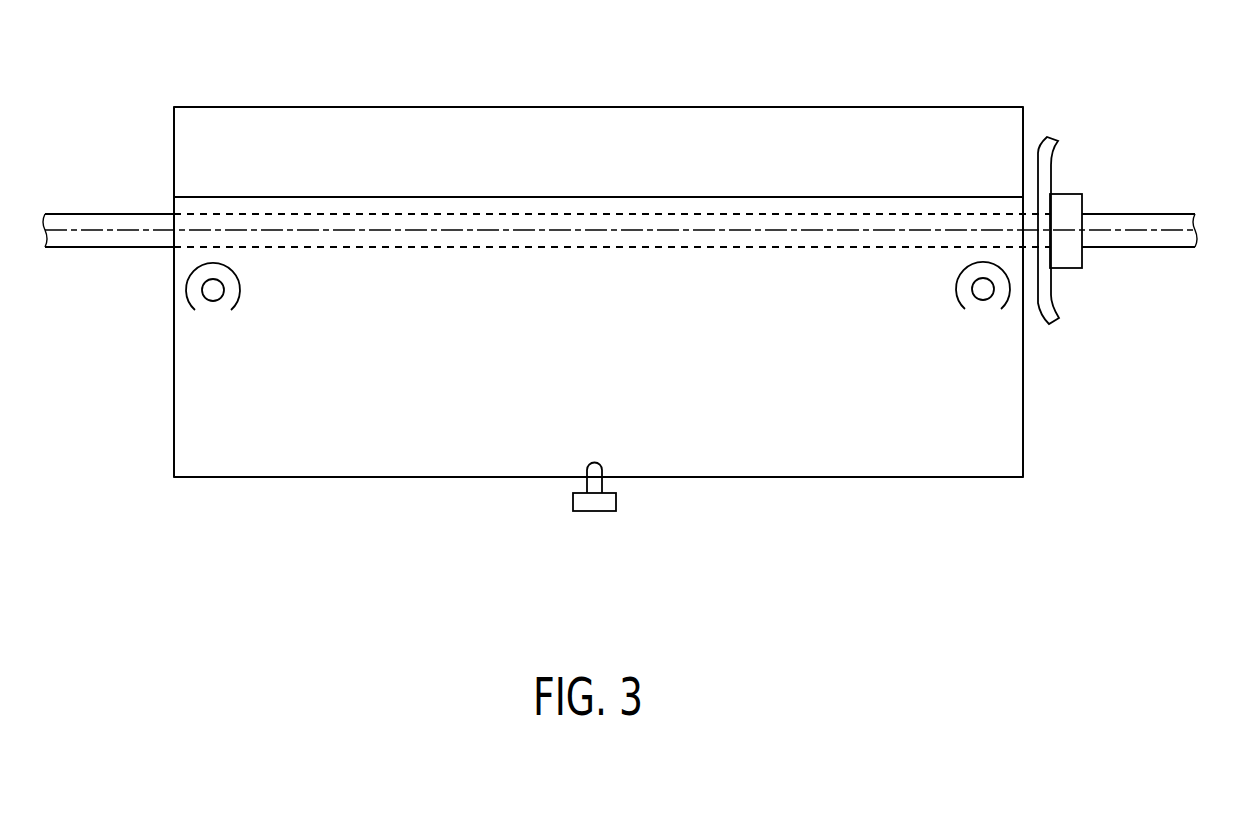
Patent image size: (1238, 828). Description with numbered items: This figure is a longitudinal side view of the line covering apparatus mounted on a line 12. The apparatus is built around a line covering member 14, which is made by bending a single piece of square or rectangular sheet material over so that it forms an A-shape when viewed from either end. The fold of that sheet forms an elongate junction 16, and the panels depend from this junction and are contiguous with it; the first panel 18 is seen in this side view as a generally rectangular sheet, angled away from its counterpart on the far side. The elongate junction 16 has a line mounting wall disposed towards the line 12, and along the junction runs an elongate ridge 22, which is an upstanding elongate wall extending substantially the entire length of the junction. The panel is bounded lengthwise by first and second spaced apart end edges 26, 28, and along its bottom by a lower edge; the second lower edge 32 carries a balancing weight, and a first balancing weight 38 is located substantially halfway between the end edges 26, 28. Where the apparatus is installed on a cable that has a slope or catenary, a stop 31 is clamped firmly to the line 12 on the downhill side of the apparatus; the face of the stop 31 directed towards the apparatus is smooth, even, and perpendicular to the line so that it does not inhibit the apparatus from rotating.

The line 12 is at (99, 211).
The line covering member 14 is at (143, 388).
The elongate junction 16 is at (900, 197).
The first panel 18 is at (569, 381).
The elongate ridge 22 is at (522, 142).
The first end edge 26 is at (173, 438).
The second end edge 28 is at (1024, 420).
The stop 31 is at (1077, 172).
The second lower edge 32 is at (900, 478).
The first balancing weight 38 is at (573, 498).